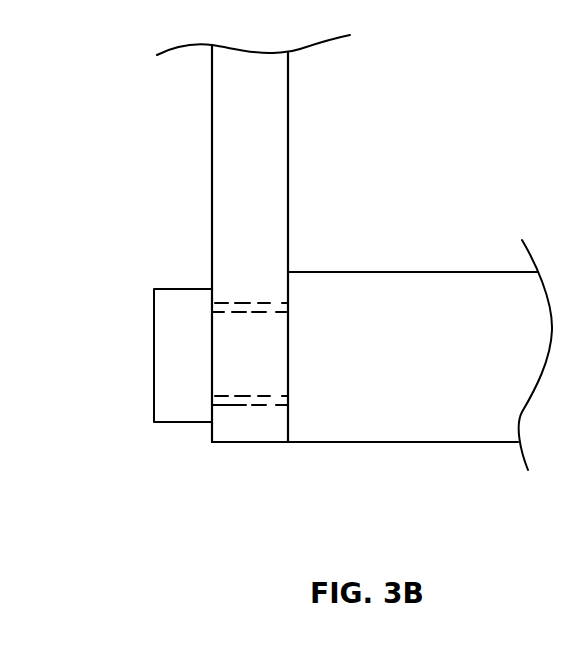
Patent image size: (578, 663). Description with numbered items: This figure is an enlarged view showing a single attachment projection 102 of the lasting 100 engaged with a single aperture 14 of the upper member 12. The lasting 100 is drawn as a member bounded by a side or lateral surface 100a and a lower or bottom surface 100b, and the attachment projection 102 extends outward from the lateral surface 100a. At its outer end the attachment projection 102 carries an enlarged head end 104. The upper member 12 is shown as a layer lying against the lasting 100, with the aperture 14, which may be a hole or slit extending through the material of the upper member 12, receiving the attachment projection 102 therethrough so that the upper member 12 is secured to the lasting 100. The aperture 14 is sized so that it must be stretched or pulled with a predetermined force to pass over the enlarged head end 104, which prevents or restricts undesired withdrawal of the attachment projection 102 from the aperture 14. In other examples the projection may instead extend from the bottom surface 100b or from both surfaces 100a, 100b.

The upper member 12 is at (211, 97).
The attachment aperture 14 is at (243, 302).
The lasting 100 is at (390, 272).
The lateral surface 100a is at (210, 437).
The bottom surface 100b is at (350, 443).
The attachment projection 102 is at (254, 404).
The enlarged head end 104 is at (153, 320).